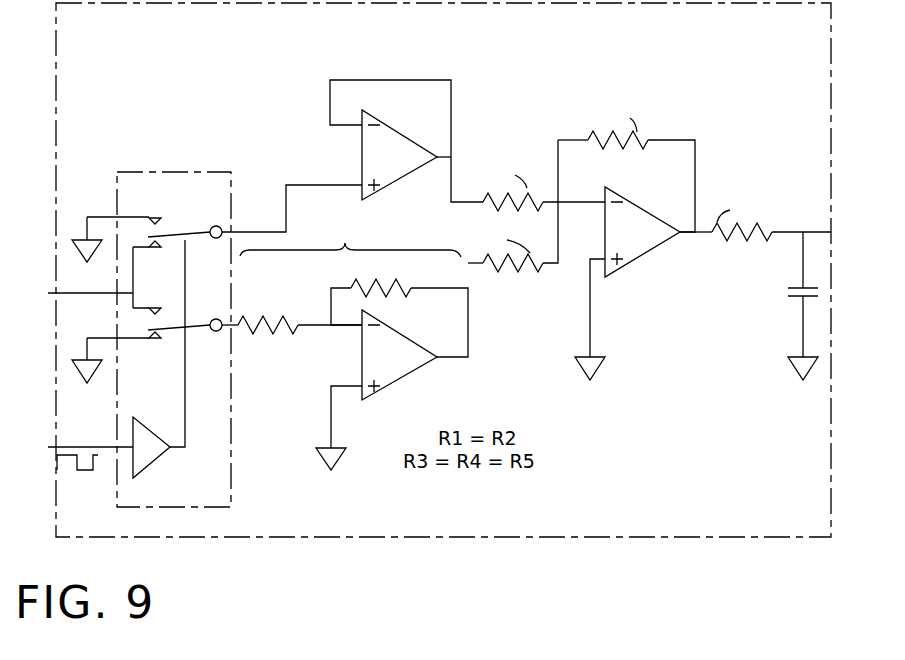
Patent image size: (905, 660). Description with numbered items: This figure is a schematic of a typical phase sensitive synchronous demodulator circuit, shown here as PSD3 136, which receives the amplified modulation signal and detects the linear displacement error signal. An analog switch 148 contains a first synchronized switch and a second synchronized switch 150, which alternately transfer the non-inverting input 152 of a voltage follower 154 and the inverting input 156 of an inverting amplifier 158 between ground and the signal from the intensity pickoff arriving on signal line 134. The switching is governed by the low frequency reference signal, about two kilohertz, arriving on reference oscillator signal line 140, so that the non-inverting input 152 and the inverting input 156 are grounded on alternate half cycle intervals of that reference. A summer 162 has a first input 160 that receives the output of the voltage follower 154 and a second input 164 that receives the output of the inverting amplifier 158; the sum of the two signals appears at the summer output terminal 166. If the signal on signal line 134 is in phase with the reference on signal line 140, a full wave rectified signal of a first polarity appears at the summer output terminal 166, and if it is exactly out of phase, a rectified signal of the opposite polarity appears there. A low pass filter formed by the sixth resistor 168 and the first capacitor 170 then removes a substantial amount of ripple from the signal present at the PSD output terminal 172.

The PSD3 136 is at (443, 270).
The voltage follower 154 is at (406, 108).
The analog switch 148 is at (157, 202).
The signal line 140 is at (182, 220).
The non-inverting input 152 is at (237, 222).
The signal line 134 is at (98, 277).
The second synchronized switch 150 is at (147, 341).
The inverting input 156 is at (233, 333).
The inverting amplifier 158 is at (350, 237).
The first input 160 is at (468, 197).
The second input 164 is at (475, 263).
The summer 162 is at (626, 148).
The summer output terminal 166 is at (700, 235).
The R6 168 is at (762, 225).
The PSD output terminal 172 is at (806, 221).
The C1 170 is at (797, 300).